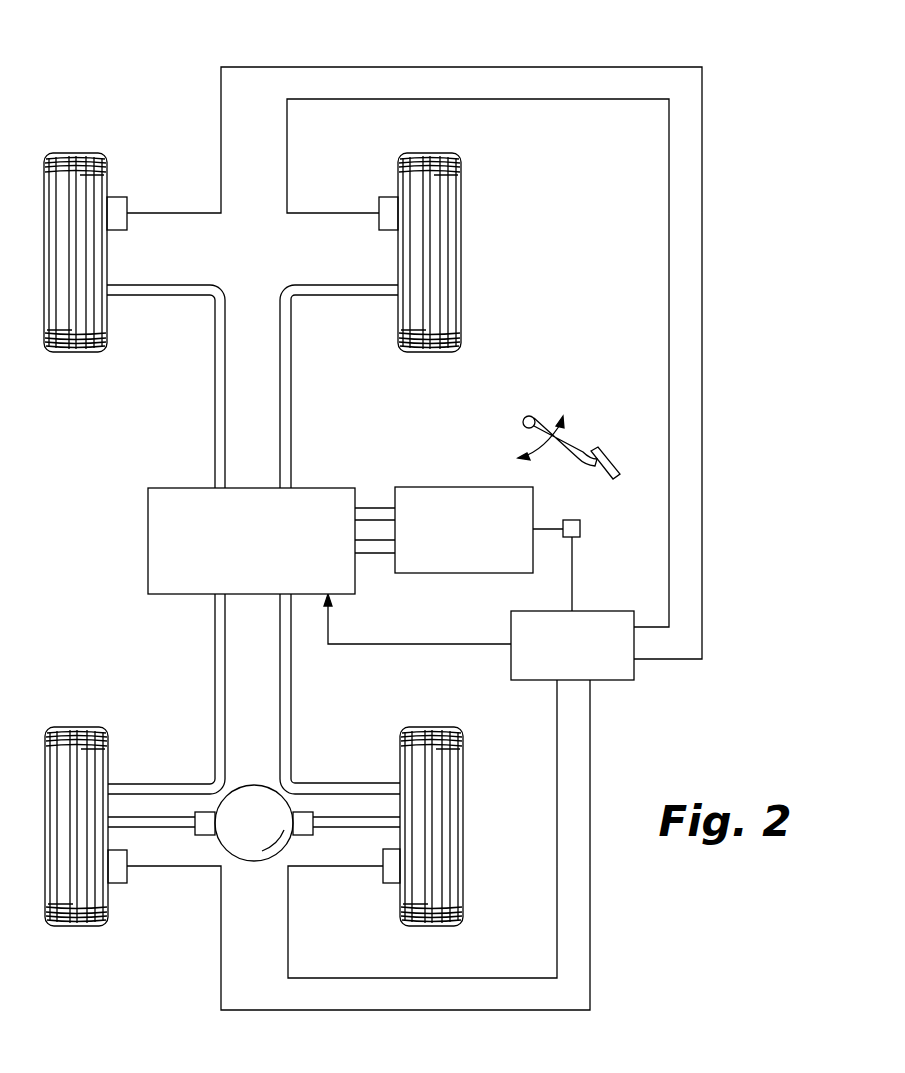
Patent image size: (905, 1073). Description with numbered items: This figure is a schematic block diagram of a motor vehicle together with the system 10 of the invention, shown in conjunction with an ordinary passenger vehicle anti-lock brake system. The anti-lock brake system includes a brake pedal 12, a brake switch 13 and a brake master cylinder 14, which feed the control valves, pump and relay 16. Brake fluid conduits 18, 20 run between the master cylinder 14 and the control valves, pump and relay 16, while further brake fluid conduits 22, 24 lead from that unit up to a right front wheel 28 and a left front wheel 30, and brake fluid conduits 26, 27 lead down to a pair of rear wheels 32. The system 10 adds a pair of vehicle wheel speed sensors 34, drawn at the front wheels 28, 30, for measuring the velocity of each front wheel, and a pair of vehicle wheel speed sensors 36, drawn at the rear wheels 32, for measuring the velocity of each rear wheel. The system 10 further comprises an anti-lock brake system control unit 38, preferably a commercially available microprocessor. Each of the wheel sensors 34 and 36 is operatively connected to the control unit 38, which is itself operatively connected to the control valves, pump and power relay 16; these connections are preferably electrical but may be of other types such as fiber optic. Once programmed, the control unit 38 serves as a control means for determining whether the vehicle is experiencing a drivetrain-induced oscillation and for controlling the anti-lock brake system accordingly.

The system 10 is at (192, 56).
The brake pedal 12 is at (570, 450).
The brake switch 13 is at (582, 528).
The brake master cylinder 14 is at (476, 487).
The control valves, pump and power relay 16 is at (148, 520).
The brake fluid conduit 18 is at (370, 505).
The brake fluid conduit 20 is at (378, 555).
The brake fluid conduit 22 is at (291, 373).
The brake fluid conduit 24 is at (215, 373).
The brake fluid conduit 26 is at (352, 783).
The brake fluid conduit 27 is at (215, 655).
The right front wheel 28 is at (461, 180).
The left front wheel 30 is at (83, 153).
The rear wheels 32 is at (83, 727).
The vehicle wheel speed sensors 34 is at (127, 200).
The vehicle wheel speed sensors 36 is at (118, 884).
The anti-lock brake system control unit 38 is at (598, 611).